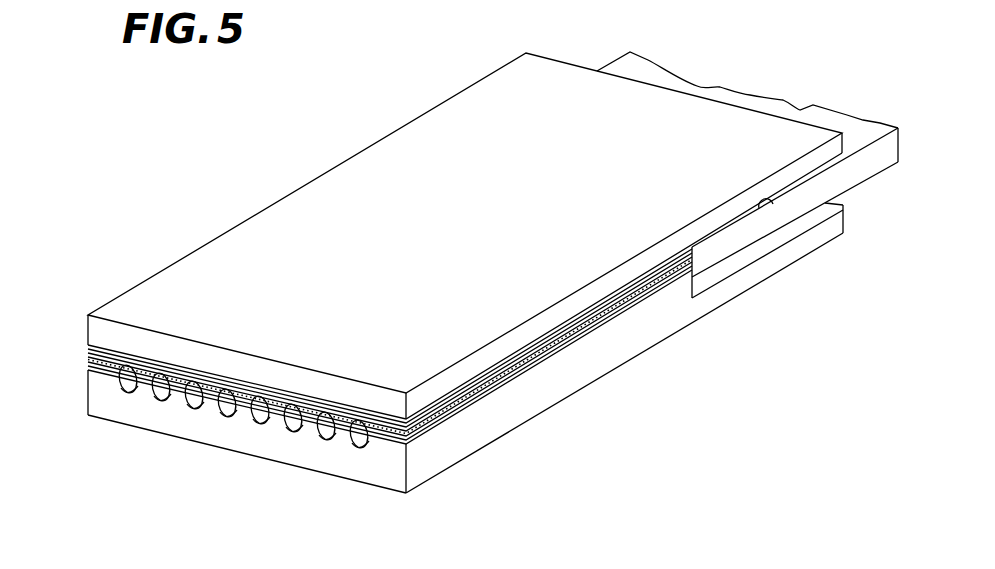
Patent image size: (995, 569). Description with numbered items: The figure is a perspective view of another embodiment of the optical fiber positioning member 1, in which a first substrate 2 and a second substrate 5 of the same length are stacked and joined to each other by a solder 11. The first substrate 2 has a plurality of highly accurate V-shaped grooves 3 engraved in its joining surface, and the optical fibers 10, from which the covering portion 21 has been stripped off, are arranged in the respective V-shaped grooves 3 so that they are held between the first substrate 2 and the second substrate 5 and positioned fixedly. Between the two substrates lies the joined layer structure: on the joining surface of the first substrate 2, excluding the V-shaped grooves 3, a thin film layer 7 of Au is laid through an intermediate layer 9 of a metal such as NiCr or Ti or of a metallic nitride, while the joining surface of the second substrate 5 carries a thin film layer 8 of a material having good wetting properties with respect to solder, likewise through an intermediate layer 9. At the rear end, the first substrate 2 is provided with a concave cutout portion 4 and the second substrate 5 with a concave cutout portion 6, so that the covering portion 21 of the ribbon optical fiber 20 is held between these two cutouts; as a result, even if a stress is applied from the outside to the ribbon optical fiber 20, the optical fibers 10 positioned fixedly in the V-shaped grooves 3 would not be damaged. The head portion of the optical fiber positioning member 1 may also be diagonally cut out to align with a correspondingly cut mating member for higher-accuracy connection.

The optical fiber positioning member 1 is at (437, 90).
The first substrate 2 is at (585, 372).
The V-shaped grooves 3 is at (318, 437).
The concave cutout portion 4 is at (813, 218).
The second substrate 5 is at (250, 240).
The concave cutout portion 6 is at (769, 205).
The thin film layer 7 is at (88, 368).
The thin film layer 8 is at (102, 348).
The intermediate layer 9 is at (115, 350).
The optical fibers 10 is at (370, 428).
The solder 11 is at (90, 354).
The ribbon optical fiber 20 is at (697, 86).
The covering portion 21 is at (873, 162).